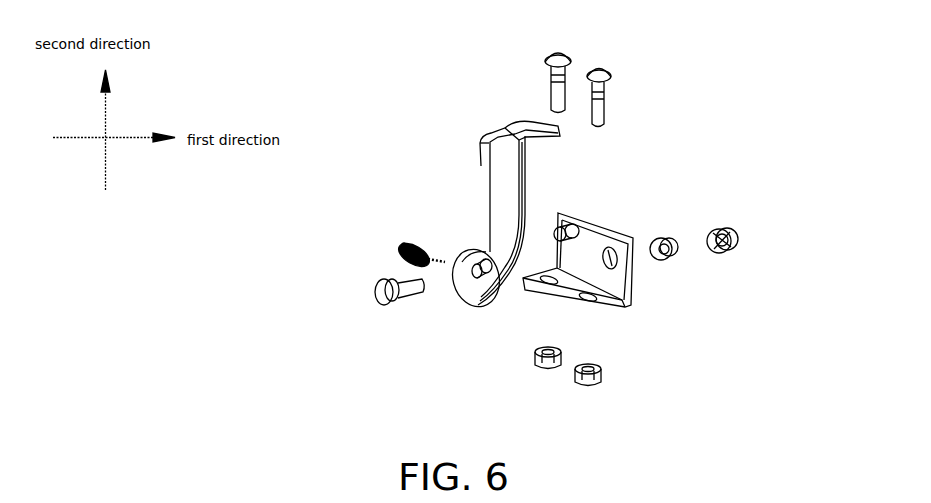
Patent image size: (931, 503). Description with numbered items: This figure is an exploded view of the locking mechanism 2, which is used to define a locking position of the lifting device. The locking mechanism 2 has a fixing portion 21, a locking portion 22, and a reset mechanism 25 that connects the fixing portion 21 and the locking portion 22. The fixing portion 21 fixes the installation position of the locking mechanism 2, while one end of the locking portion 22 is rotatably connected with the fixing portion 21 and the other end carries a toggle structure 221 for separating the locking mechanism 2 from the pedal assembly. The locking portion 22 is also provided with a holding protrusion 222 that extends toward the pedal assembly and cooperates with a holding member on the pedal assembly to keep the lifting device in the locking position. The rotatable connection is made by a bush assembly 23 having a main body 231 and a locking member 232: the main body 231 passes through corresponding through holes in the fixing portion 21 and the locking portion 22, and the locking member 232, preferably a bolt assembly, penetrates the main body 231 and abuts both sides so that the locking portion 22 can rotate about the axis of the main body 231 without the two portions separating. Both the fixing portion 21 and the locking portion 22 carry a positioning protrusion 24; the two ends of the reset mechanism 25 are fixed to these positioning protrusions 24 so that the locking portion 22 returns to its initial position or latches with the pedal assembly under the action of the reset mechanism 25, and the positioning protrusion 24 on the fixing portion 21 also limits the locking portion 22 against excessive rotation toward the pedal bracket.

The locking mechanism 2 is at (289, 20).
The fixing portion 21 is at (625, 310).
The locking portion 22 is at (466, 314).
The toggle structure 221 is at (535, 122).
The holding protrusion 222 is at (486, 155).
The bush assembly 23 is at (715, 188).
The main body 231 is at (670, 257).
The locking member 232 is at (740, 225).
The positioning protrusion 24 is at (488, 260).
The reset mechanism 25 is at (407, 242).